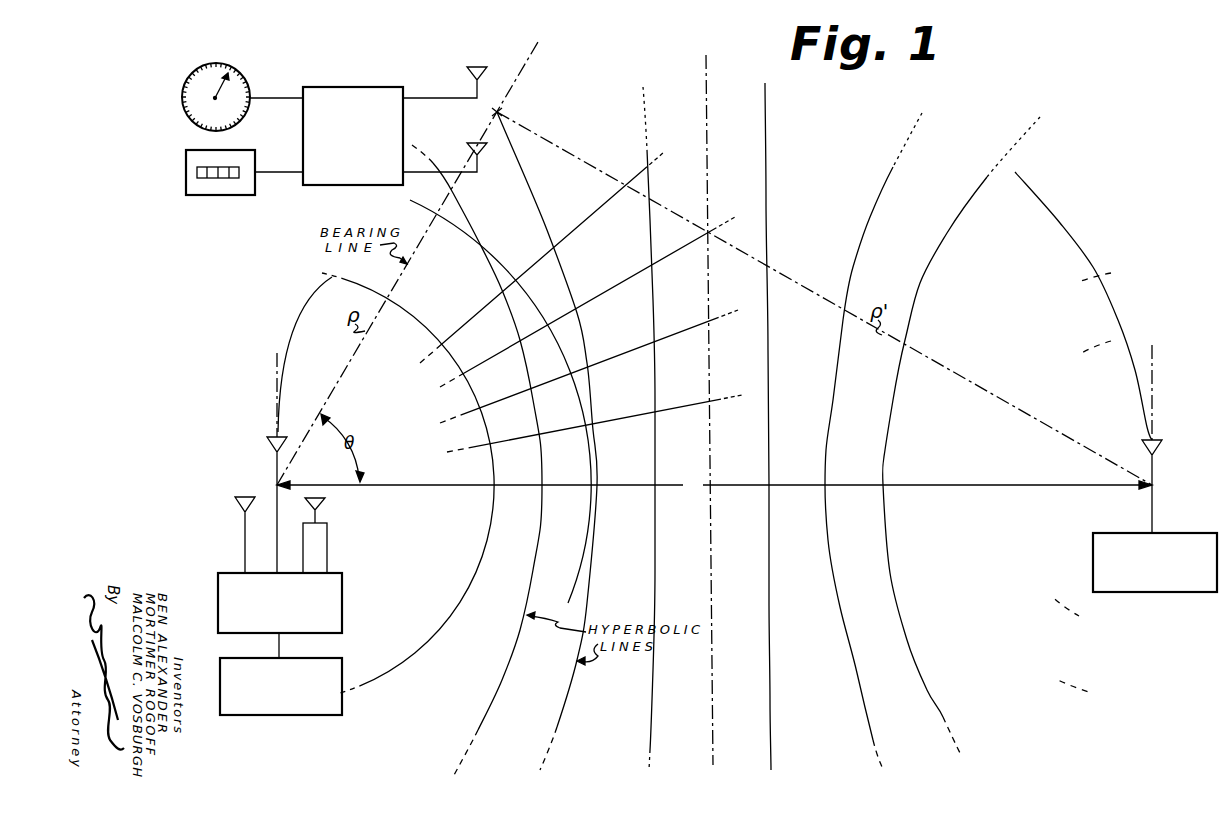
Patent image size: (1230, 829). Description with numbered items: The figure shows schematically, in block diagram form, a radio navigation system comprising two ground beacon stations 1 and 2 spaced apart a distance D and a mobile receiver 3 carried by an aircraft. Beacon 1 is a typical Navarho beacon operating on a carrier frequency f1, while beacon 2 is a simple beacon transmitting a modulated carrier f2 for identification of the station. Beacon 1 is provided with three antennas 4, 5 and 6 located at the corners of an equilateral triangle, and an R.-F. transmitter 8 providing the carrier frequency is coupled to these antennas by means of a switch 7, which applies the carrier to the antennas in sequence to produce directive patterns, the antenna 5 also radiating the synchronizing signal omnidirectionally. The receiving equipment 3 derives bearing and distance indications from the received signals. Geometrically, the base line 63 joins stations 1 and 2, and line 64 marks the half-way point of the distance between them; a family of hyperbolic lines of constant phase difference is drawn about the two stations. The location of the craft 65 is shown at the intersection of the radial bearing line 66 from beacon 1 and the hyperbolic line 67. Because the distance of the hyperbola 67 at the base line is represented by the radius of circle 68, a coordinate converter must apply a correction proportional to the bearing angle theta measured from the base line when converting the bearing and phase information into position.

The ground beacon station 1 is at (271, 534).
The ground beacon station 2 is at (1176, 508).
The mobile receiver 3 is at (337, 75).
The antenna 4 is at (243, 496).
The antenna 5 is at (326, 502).
The antenna 6 is at (267, 440).
The switch 7 is at (342, 607).
The R.-F. transmitter 8 is at (342, 672).
The base line 63 is at (725, 483).
The half way mark line 64 is at (705, 105).
The location of the craft 65 is at (500, 111).
The radial bearing line 66 is at (524, 70).
The hyperbolic line 67 is at (535, 193).
The circle 68 is at (450, 225).